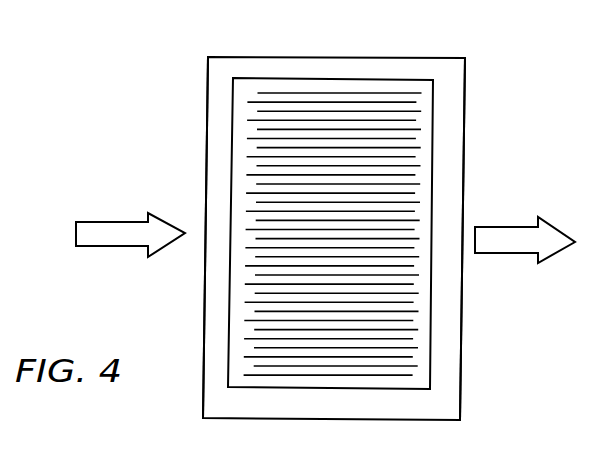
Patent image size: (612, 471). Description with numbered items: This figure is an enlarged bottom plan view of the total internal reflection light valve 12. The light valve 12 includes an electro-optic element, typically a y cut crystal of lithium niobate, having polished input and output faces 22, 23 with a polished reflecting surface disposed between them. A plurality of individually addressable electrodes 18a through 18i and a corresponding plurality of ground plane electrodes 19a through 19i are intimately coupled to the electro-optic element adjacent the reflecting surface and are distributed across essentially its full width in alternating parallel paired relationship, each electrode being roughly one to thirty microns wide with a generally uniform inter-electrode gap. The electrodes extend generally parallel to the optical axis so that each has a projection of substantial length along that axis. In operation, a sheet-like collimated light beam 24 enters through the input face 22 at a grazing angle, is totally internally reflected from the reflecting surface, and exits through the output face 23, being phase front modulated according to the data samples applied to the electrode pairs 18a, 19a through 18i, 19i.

The light valve 12 is at (413, 51).
The individually addressable electrode 18a is at (250, 101).
The individually addressable electrode 18i is at (392, 377).
The ground plane electrode 19a is at (311, 92).
The ground plane electrode 19i is at (388, 371).
The input face 22 is at (207, 143).
The output face 23 is at (464, 152).
The light beam 24 is at (122, 223).